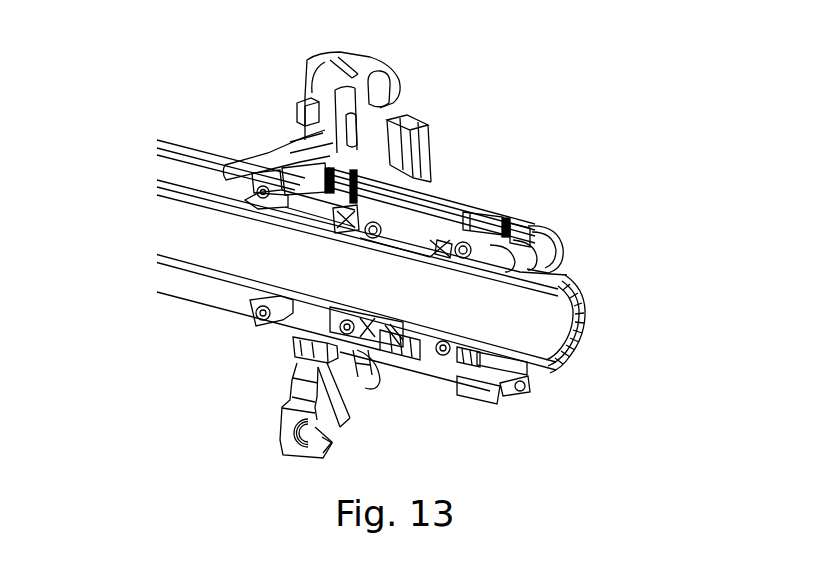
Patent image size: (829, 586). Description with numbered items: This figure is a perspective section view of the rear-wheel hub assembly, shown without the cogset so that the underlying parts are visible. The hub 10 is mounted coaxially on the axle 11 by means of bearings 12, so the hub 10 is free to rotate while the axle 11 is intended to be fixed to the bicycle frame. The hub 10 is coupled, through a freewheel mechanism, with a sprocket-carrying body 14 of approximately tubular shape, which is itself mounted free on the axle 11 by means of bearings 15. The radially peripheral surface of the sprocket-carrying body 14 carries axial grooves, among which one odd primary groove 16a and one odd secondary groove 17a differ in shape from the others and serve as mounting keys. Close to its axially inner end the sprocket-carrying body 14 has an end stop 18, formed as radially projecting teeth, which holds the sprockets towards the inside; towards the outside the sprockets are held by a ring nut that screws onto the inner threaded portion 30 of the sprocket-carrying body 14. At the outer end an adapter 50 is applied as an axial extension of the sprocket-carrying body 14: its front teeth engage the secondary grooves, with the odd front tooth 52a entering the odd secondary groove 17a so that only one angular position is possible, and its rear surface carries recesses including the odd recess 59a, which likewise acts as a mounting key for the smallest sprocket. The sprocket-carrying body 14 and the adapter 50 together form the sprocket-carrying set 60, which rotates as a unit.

The hub 10 is at (165, 289).
The axle 11 is at (160, 192).
The bearings 12 is at (258, 177).
The sprocket-carrying body 14 is at (461, 198).
The bearings 15 is at (330, 331).
The odd primary groove 16a is at (537, 231).
The odd secondary groove 17a is at (407, 131).
The end stop 18 is at (372, 360).
The inner threaded portion 30 is at (488, 355).
The adapter 50 is at (561, 248).
The odd front tooth 52a is at (481, 217).
The odd recess 59a is at (531, 221).
The sprocket-carrying set 60 is at (524, 188).